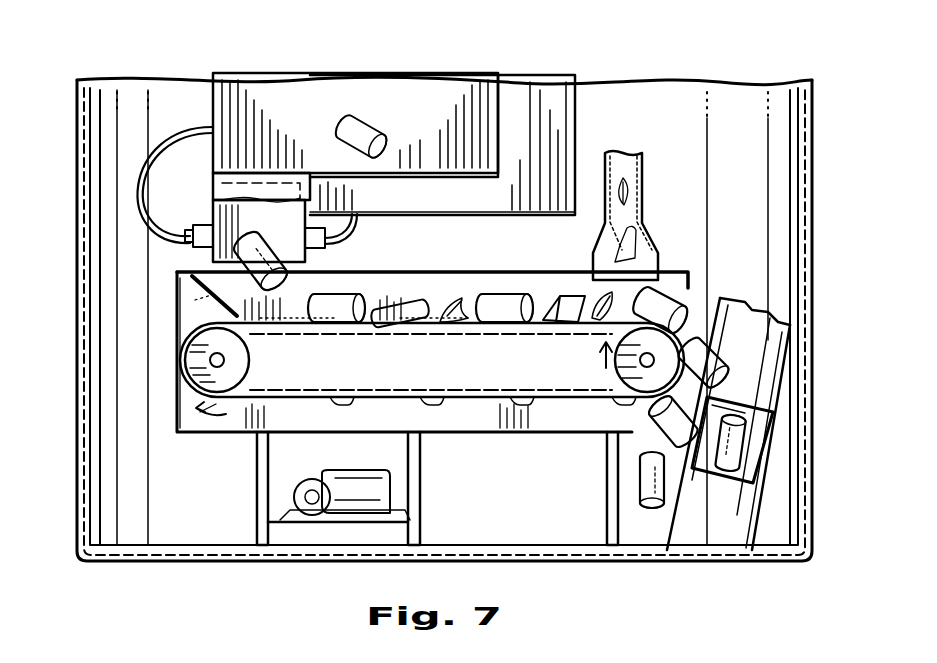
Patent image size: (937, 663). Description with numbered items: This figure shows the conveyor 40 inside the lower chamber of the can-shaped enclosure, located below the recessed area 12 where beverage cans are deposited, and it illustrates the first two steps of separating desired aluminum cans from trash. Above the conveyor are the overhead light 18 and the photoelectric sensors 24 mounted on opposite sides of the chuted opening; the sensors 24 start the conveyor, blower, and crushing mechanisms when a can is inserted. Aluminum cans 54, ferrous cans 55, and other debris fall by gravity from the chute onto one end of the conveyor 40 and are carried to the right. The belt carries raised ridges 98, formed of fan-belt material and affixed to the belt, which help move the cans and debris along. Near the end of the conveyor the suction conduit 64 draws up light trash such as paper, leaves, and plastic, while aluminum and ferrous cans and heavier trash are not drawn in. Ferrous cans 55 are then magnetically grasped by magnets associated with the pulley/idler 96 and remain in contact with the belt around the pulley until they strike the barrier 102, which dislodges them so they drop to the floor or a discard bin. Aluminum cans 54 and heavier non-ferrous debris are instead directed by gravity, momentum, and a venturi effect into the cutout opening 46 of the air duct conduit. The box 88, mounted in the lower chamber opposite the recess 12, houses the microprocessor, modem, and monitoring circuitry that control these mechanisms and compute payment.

The recessed area 12 is at (575, 110).
The overhead light 18 is at (265, 198).
The photoelectric sensors 24 is at (188, 238).
The conveyor 40 is at (214, 434).
The cutout opening 46 is at (753, 446).
The aluminum cans 54 is at (180, 272).
The ferrous cans 55 is at (638, 421).
The suction conduit 64 is at (640, 155).
The box 88 is at (488, 108).
The pulley/idler 96 is at (622, 386).
The raised ridges 98 is at (240, 434).
The barrier 102 is at (577, 434).